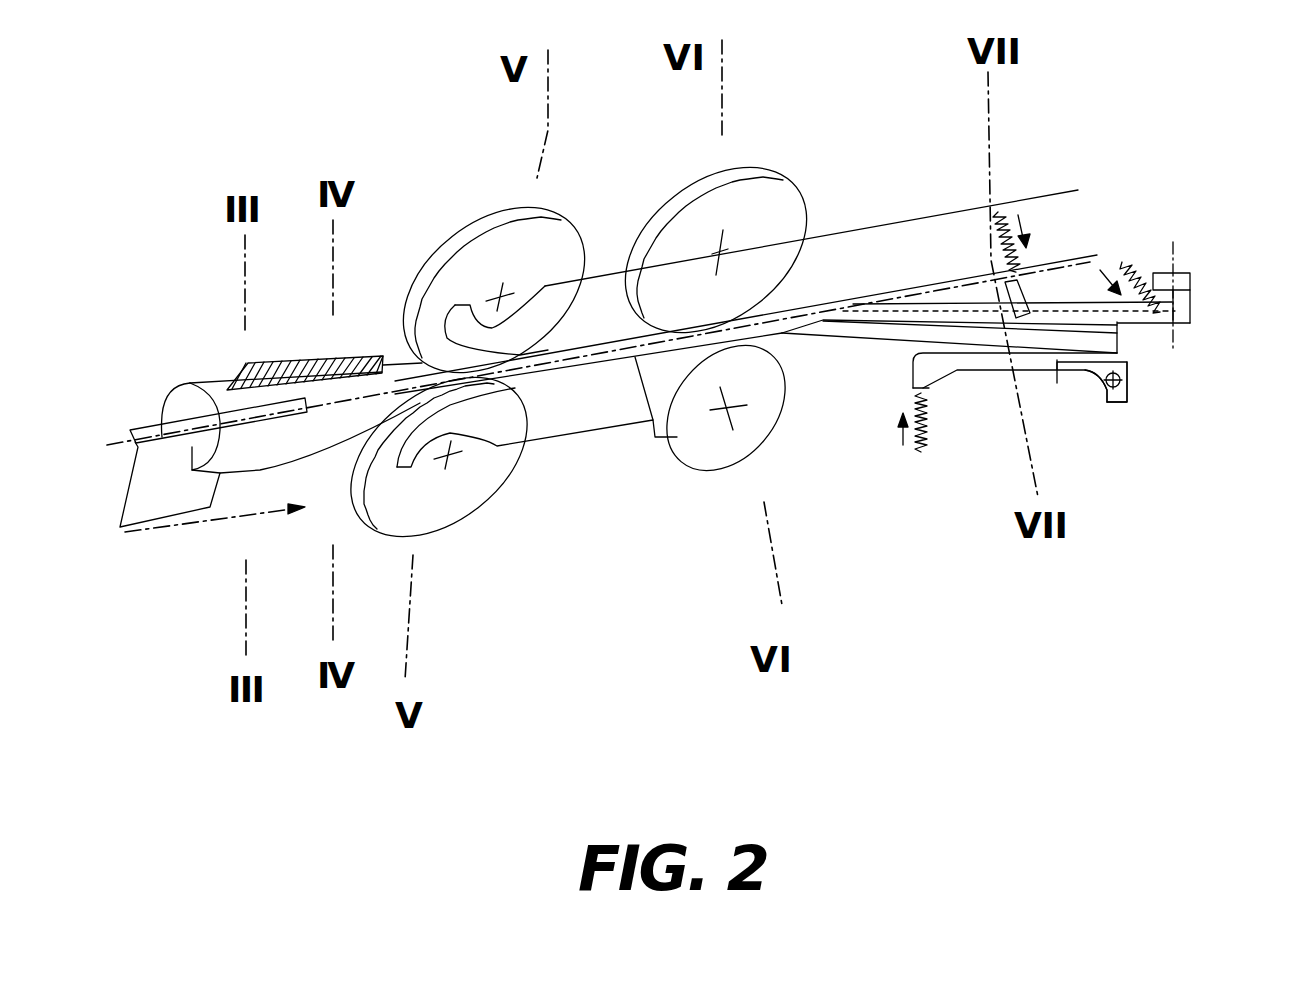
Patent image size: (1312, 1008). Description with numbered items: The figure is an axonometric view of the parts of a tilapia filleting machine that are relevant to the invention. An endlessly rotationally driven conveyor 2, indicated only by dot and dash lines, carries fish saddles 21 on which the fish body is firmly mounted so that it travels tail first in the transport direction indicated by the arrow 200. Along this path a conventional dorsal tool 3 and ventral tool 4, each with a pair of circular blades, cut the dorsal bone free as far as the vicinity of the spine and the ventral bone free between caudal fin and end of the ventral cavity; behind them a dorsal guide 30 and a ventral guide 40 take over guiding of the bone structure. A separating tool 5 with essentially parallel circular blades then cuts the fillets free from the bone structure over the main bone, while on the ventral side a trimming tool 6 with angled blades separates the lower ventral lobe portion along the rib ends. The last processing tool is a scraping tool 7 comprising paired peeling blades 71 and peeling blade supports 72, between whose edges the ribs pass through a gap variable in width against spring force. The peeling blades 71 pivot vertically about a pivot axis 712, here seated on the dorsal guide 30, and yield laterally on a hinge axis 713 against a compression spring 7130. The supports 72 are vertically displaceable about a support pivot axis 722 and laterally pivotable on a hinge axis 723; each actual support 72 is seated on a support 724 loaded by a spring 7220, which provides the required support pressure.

The conveyor 2 is at (151, 432).
The fish saddle 21 is at (168, 497).
The direction of transport 200 is at (233, 523).
The dorsal tool 3 is at (487, 257).
The ventral tool 4 is at (463, 497).
The separating tool 5 is at (773, 197).
The trimming tool 6 is at (713, 447).
The dorsal guide 30 is at (600, 275).
The ventral guide 40 is at (573, 420).
The scraping tool 7 is at (828, 343).
The peeling blade 71 is at (1060, 310).
The peeling blade support 72 is at (853, 335).
The pivot axis 712 is at (1205, 289).
The hinge axis 713 is at (1193, 330).
The compression spring 7130 is at (1128, 265).
The support pivot axis 722 is at (1125, 383).
The hinge axis 723 is at (1067, 385).
The support 724 is at (1120, 397).
The spring 7220 is at (923, 453).